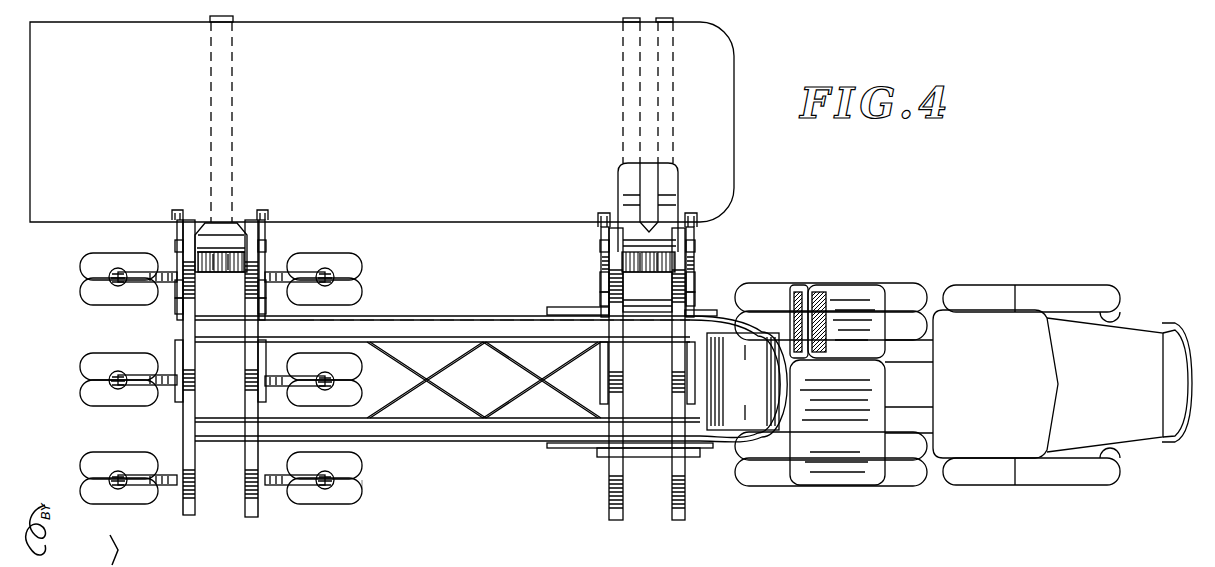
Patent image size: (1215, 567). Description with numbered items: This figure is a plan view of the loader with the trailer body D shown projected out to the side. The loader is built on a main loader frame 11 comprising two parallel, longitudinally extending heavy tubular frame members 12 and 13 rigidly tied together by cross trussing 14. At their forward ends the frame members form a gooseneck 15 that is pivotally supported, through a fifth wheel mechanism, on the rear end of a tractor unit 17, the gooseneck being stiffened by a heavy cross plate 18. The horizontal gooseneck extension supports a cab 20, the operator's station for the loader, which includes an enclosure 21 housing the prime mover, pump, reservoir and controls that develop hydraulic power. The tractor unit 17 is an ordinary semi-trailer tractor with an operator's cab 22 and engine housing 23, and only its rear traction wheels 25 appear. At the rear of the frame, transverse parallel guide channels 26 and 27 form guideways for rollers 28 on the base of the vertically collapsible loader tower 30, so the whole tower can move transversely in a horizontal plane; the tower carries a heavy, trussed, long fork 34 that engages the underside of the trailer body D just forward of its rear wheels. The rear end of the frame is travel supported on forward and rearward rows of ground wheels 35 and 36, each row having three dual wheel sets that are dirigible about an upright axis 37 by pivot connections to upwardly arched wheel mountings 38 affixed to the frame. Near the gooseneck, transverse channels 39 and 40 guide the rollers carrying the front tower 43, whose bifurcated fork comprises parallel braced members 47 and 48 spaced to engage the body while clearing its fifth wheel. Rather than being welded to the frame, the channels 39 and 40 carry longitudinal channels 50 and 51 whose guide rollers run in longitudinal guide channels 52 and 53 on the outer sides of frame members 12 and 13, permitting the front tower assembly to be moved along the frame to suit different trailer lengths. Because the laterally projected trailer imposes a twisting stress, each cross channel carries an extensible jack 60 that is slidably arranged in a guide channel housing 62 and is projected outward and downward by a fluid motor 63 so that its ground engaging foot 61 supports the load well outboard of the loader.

The trailer body D is at (382, 122).
The main loader frame 11 is at (448, 444).
The tubular frame member 12 is at (466, 315).
The tubular frame member 13 is at (482, 445).
The cross trussing 14 is at (492, 372).
The gooseneck 15 is at (768, 455).
The tractor unit 17 is at (1000, 298).
The cross plate 18 is at (743, 381).
The cab 20 is at (852, 288).
The enclosure 21 is at (837, 422).
The operator's cab 22 is at (995, 384).
The engine housing 23 is at (1119, 385).
The rear traction wheels 25 is at (907, 305).
The guide channel 26 is at (258, 510).
The guide channel 27 is at (186, 510).
The rollers 28 is at (266, 244).
The loader tower 30 is at (236, 266).
The fork 34 is at (232, 157).
The ground wheels 35 is at (362, 492).
The ground wheels 36 is at (86, 408).
The upright axis 37 is at (333, 271).
The wheel mountings 38 is at (140, 375).
The channel 39 is at (685, 499).
The channel 40 is at (609, 500).
The front tower 43 is at (620, 268).
The fork member 47 is at (665, 185).
The fork member 48 is at (628, 190).
The longitudinal channel 50 is at (652, 458).
The longitudinal channel 51 is at (640, 312).
The longitudinal guide channel 52 is at (556, 448).
The longitudinal guide channel 53 is at (575, 312).
The extensible jack 60 is at (177, 236).
The ground engaging foot 61 is at (270, 213).
The guide channel housing 62 is at (268, 300).
The fluid motor 63 is at (178, 406).